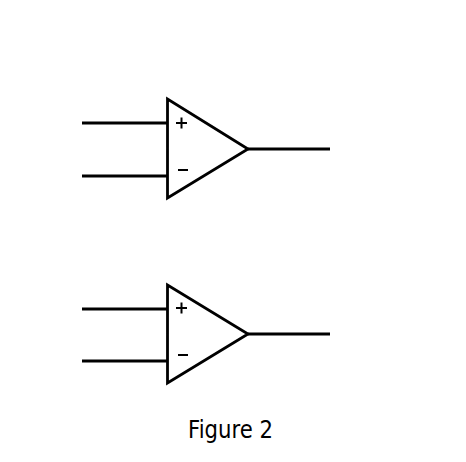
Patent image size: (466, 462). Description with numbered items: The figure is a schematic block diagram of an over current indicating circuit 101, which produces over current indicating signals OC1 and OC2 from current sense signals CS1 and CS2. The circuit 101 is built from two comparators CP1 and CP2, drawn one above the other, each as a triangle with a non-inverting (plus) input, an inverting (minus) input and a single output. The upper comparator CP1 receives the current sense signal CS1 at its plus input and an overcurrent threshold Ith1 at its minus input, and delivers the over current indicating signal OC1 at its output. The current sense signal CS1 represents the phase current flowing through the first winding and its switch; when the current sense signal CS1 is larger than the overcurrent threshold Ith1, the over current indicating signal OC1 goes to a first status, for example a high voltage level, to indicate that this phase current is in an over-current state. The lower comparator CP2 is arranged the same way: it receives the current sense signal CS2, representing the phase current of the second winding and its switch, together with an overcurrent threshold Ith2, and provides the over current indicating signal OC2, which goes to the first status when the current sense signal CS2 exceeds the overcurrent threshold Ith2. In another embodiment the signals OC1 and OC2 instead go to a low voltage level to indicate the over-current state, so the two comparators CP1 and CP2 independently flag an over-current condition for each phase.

The over current indicating circuit 101 is at (352, 90).
The comparator CP1 is at (208, 148).
The comparator CP2 is at (208, 334).
The current sense signal CS1 is at (99, 117).
The current sense signal CS2 is at (99, 303).
The overcurrent threshold Ith1 is at (101, 174).
The overcurrent threshold Ith2 is at (101, 358).
The over current indicating signal OC1 is at (289, 134).
The over current indicating signal OC2 is at (289, 319).